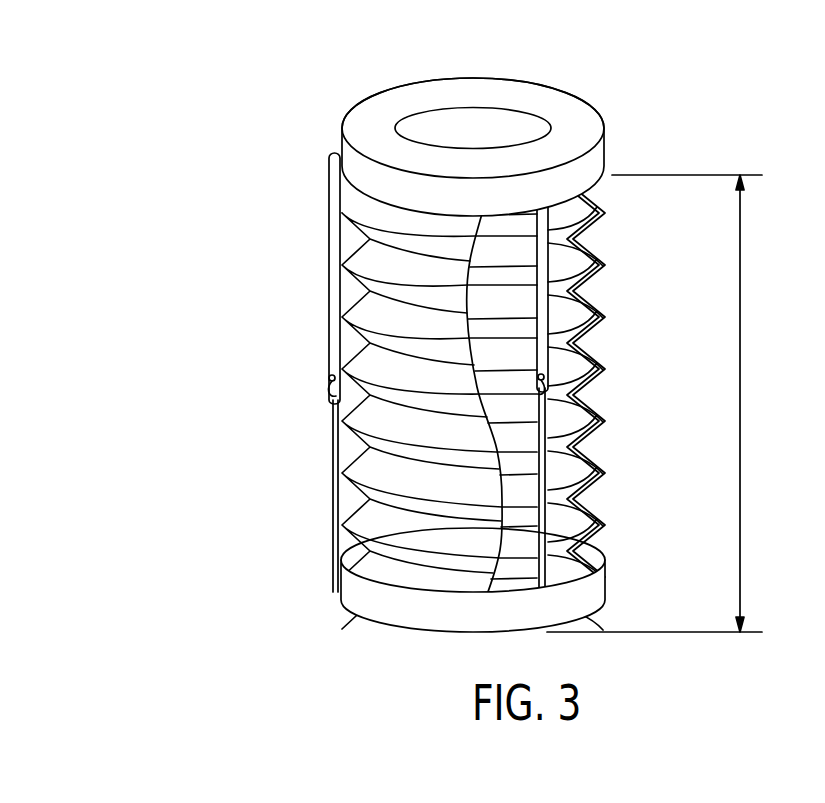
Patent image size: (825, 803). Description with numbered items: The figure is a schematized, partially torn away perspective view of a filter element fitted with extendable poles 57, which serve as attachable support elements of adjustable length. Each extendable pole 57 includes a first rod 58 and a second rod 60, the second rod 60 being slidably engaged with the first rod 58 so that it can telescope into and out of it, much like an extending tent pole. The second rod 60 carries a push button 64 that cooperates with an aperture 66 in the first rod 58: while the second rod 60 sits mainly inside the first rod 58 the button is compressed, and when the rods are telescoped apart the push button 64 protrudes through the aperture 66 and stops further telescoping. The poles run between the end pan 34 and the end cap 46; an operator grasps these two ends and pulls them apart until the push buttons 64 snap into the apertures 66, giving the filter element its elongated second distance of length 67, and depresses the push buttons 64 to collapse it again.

The end pan 34 is at (388, 624).
The end cap 46 is at (551, 88).
The extendable pole 57 is at (266, 440).
The first rod 58 is at (329, 270).
The second rod 60 is at (333, 503).
The push button 64 is at (329, 380).
The aperture 66 is at (331, 395).
The length 67 is at (742, 395).